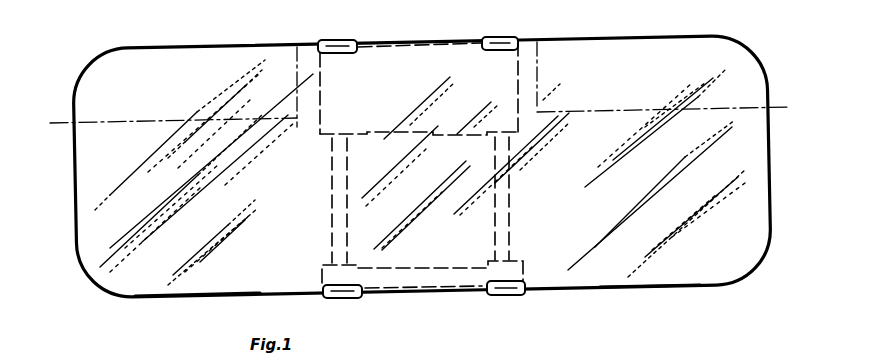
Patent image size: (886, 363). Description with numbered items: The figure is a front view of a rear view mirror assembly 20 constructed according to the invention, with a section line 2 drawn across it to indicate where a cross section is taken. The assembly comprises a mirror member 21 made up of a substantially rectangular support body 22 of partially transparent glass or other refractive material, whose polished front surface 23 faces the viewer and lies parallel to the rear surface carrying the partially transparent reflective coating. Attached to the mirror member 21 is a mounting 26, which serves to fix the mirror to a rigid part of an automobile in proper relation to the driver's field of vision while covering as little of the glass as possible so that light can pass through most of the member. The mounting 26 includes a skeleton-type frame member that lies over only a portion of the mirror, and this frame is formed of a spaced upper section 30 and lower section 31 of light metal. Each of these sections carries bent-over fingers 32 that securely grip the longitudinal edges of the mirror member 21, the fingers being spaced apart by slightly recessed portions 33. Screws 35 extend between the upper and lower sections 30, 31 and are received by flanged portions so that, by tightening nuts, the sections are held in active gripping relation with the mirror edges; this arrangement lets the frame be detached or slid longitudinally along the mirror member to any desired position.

The section line 2- 2 is at (50, 123).
The rear view mirror assembly 20 is at (87, 58).
The mirror member 21 is at (193, 289).
The support body 22 is at (663, 273).
The front surface 23 is at (597, 272).
The mounting 26 is at (306, 58).
The upper section 30 is at (553, 45).
The lower section 31 is at (532, 272).
The bent-over fingers 32 is at (343, 42).
The recessed portions 33 is at (460, 42).
The screws 35 is at (335, 227).